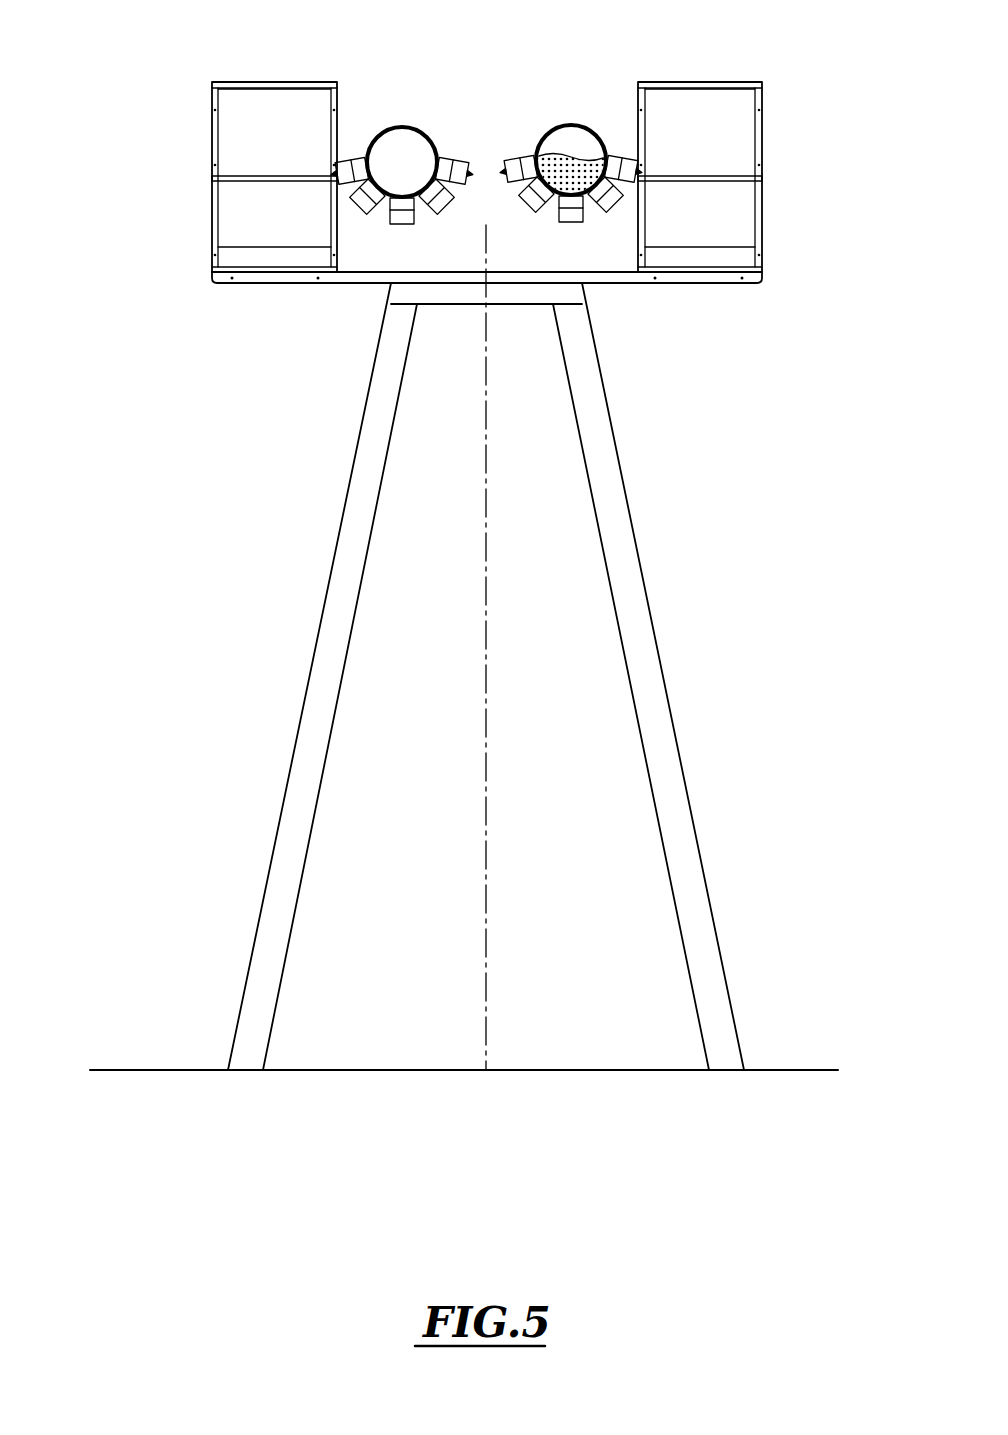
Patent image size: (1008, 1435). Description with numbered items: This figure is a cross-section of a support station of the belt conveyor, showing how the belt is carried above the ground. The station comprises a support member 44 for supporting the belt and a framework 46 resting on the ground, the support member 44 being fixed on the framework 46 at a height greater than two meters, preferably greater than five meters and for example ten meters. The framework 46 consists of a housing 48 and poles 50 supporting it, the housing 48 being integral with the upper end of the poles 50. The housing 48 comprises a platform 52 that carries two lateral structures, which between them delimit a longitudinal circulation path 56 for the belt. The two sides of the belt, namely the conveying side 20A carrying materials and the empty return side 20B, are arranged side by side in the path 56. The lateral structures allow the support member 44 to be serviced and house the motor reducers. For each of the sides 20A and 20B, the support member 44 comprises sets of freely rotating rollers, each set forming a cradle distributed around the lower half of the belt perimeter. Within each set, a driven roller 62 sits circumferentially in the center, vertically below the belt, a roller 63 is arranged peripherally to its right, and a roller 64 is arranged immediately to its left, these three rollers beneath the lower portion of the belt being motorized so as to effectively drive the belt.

The conveying side 20A is at (560, 182).
The empty return side 20B is at (402, 182).
The support member 44 is at (595, 80).
The framework 46 is at (549, 676).
The housing 48 is at (478, 321).
The poles 50 is at (307, 742).
The platform 52 is at (690, 278).
The longitudinal circulation path 56 is at (490, 64).
The driven rollers 62 is at (571, 222).
The rollers 63 is at (610, 205).
The rollers 64 is at (530, 203).